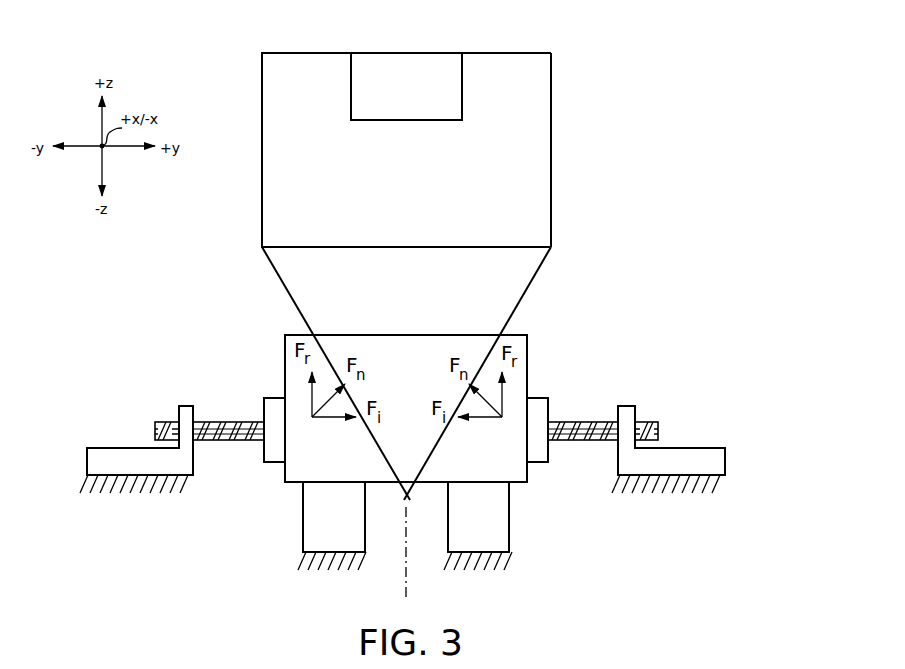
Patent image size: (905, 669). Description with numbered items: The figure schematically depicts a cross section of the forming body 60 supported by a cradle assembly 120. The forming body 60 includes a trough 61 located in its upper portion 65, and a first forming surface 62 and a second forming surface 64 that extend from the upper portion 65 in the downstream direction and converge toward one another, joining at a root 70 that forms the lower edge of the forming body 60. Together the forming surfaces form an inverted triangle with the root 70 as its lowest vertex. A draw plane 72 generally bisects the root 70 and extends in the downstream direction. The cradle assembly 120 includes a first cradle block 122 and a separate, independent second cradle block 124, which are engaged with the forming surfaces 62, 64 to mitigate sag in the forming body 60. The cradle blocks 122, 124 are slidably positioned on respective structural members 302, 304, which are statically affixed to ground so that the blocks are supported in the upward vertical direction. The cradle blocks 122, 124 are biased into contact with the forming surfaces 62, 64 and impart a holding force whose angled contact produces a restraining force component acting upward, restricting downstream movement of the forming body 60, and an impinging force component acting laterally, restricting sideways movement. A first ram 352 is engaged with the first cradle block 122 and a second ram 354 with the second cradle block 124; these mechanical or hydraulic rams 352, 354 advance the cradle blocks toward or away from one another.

The forming body 60 is at (612, 77).
The trough 61 is at (396, 71).
The first forming surface 62 is at (262, 251).
The second forming surface 64 is at (538, 272).
The upper portion 65 is at (551, 155).
The root 70 is at (404, 503).
The draw plane 72 is at (406, 577).
The cradle assembly 120 is at (266, 331).
The first cradle block 122 is at (285, 366).
The second cradle block 124 is at (527, 366).
The structural member 302 is at (303, 527).
The structural member 304 is at (509, 527).
The first ram 352 is at (140, 418).
The second ram 354 is at (676, 418).